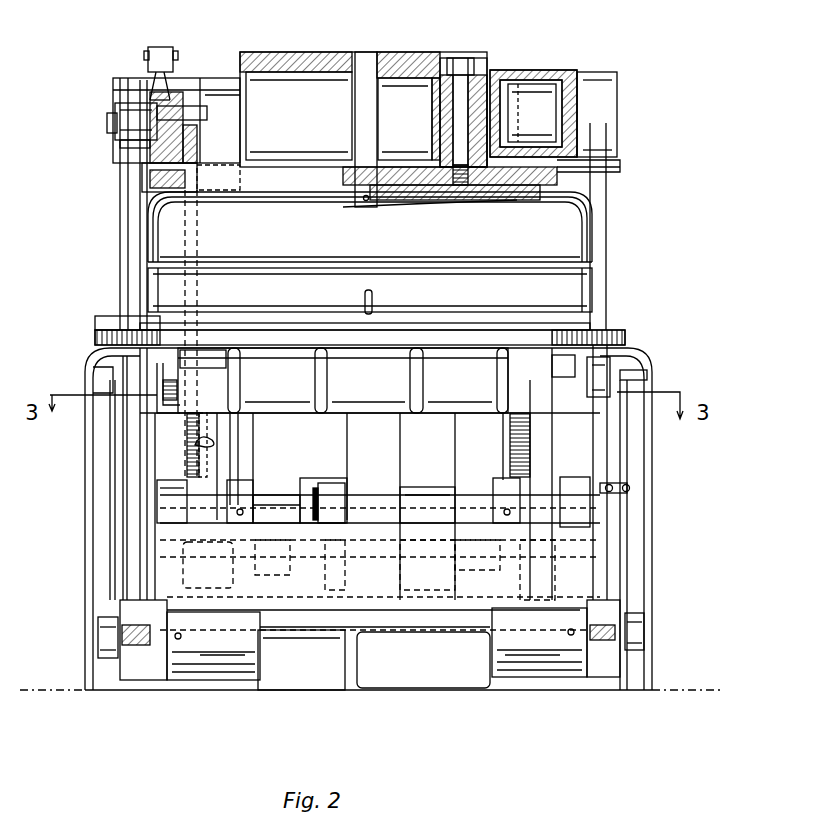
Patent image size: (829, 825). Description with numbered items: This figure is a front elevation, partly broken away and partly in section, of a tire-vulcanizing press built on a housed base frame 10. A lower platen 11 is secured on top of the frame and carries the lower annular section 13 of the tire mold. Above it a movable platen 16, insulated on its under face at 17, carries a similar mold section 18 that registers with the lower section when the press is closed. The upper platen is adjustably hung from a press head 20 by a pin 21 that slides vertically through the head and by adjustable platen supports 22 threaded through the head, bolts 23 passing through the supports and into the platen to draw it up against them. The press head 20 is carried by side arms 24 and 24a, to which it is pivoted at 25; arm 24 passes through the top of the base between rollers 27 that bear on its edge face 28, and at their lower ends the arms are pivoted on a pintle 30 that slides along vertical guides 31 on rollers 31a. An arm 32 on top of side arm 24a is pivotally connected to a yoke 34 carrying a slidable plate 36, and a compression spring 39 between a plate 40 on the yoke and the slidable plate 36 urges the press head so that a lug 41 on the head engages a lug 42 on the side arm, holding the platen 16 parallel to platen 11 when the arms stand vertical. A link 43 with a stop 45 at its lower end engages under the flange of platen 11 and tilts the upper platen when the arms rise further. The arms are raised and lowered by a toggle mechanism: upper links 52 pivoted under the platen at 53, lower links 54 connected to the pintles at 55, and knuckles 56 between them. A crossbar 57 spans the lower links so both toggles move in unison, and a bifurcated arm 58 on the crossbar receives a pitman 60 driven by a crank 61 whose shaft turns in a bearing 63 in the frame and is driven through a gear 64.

The base frame 10 is at (88, 370).
The lower platen 11 is at (627, 335).
The lower annular section 13 is at (567, 290).
The movable platen 16 is at (315, 55).
The insulating material 17 is at (614, 177).
The mold section 18 is at (568, 233).
The press head 20 is at (207, 72).
The pin 21 is at (365, 55).
The adjustable platen supports 22 is at (477, 77).
The bolts 23 is at (463, 62).
The side arm 24 is at (607, 198).
The side arm 24a is at (128, 220).
The pivot 25 is at (530, 103).
The rollers 27 is at (602, 360).
The edge face 28 is at (600, 448).
The pintle 30 is at (260, 652).
The vertical guides 31 is at (643, 507).
The rollers 31a is at (105, 615).
The arm 32 is at (146, 55).
The yoke 34 is at (167, 53).
The slidable plate 36 is at (187, 82).
The compression spring 39 is at (130, 76).
The plate 40 is at (140, 165).
The lug 41 is at (127, 115).
The lug 42 is at (130, 137).
The link 43 is at (207, 442).
The stop 45 is at (193, 437).
The upper links 52 is at (221, 433).
The pivot 53 is at (177, 393).
The lower links 54 is at (188, 652).
The connection 55 is at (220, 655).
The knuckles 56 is at (157, 520).
The crossbar 57 is at (413, 603).
The bifurcated arm 58 is at (303, 483).
The pitman 60 is at (277, 495).
The crank 61 is at (317, 500).
The bearing 63 is at (410, 487).
The gear 64 is at (557, 427).